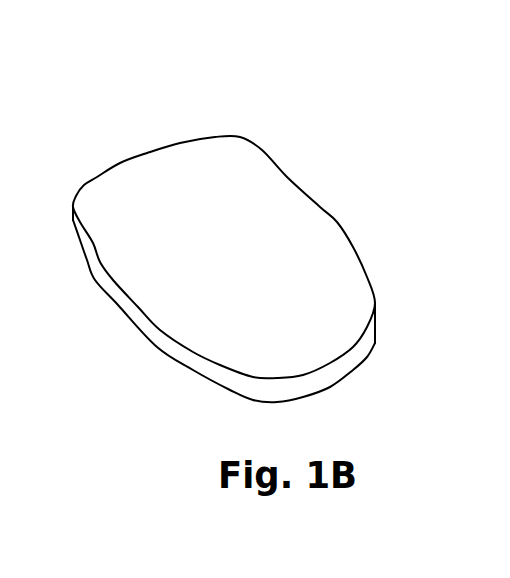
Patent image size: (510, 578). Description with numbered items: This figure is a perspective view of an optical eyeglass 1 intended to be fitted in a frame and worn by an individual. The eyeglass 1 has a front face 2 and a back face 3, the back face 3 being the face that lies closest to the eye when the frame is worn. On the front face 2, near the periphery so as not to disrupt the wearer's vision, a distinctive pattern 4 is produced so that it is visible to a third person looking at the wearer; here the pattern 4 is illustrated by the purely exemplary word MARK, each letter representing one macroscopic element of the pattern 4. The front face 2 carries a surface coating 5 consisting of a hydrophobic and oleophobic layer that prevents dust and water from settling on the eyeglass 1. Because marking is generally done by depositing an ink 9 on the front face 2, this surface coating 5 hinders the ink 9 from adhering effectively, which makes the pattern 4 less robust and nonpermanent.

The optical eyeglass 1 is at (197, 248).
The front face 2 is at (277, 255).
The back face 3 is at (155, 345).
The distinctive pattern 4 is at (112, 153).
The surface coating 5 is at (140, 307).
The ink 9 is at (110, 182).